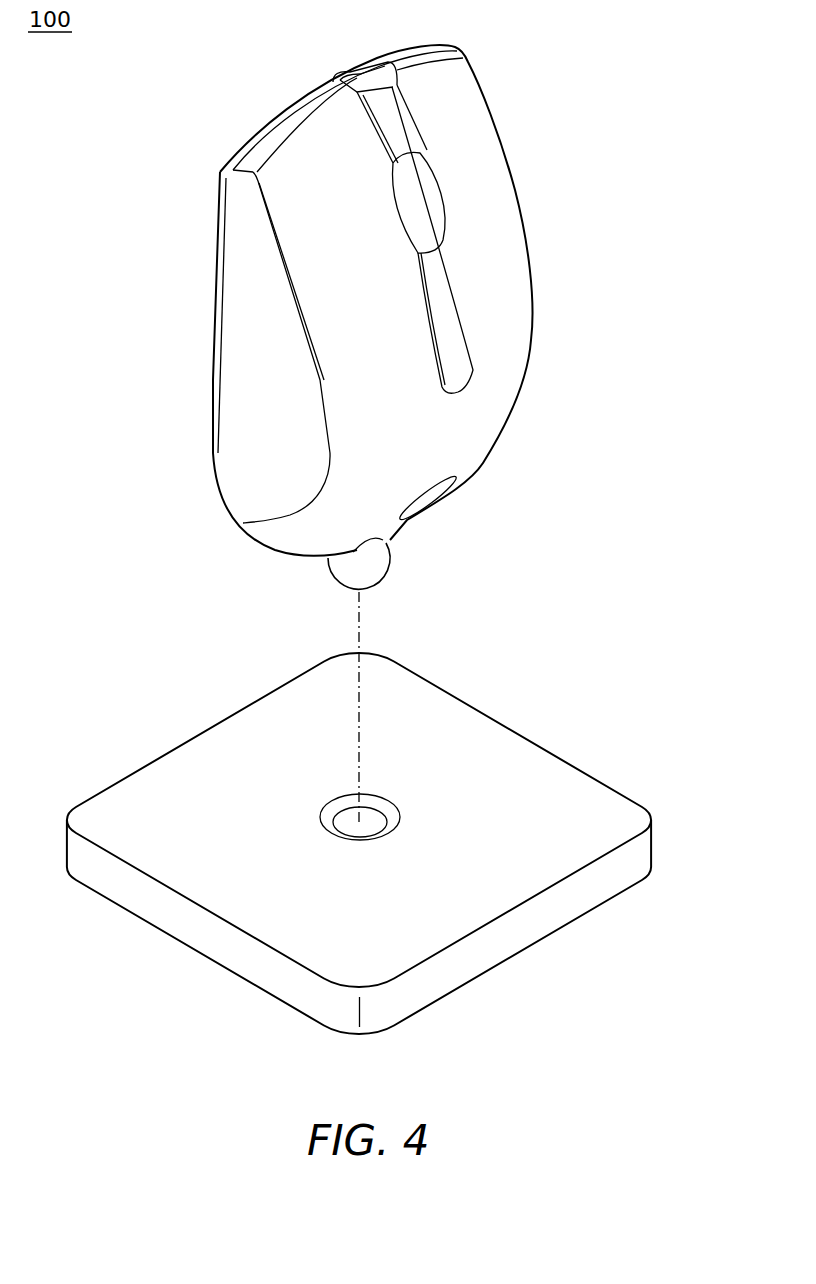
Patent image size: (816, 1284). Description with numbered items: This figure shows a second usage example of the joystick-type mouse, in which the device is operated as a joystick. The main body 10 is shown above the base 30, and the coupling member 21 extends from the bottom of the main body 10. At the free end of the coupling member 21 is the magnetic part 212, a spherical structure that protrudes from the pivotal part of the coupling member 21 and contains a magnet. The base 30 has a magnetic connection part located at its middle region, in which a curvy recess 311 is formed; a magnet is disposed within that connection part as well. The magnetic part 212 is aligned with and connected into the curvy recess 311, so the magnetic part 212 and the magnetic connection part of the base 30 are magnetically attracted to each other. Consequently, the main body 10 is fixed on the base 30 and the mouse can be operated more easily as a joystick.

The main body 10 is at (557, 323).
The coupling member 21 is at (414, 566).
The magnetic part 212 is at (377, 568).
The base 30 is at (382, 843).
The curvy recess 311 is at (372, 817).